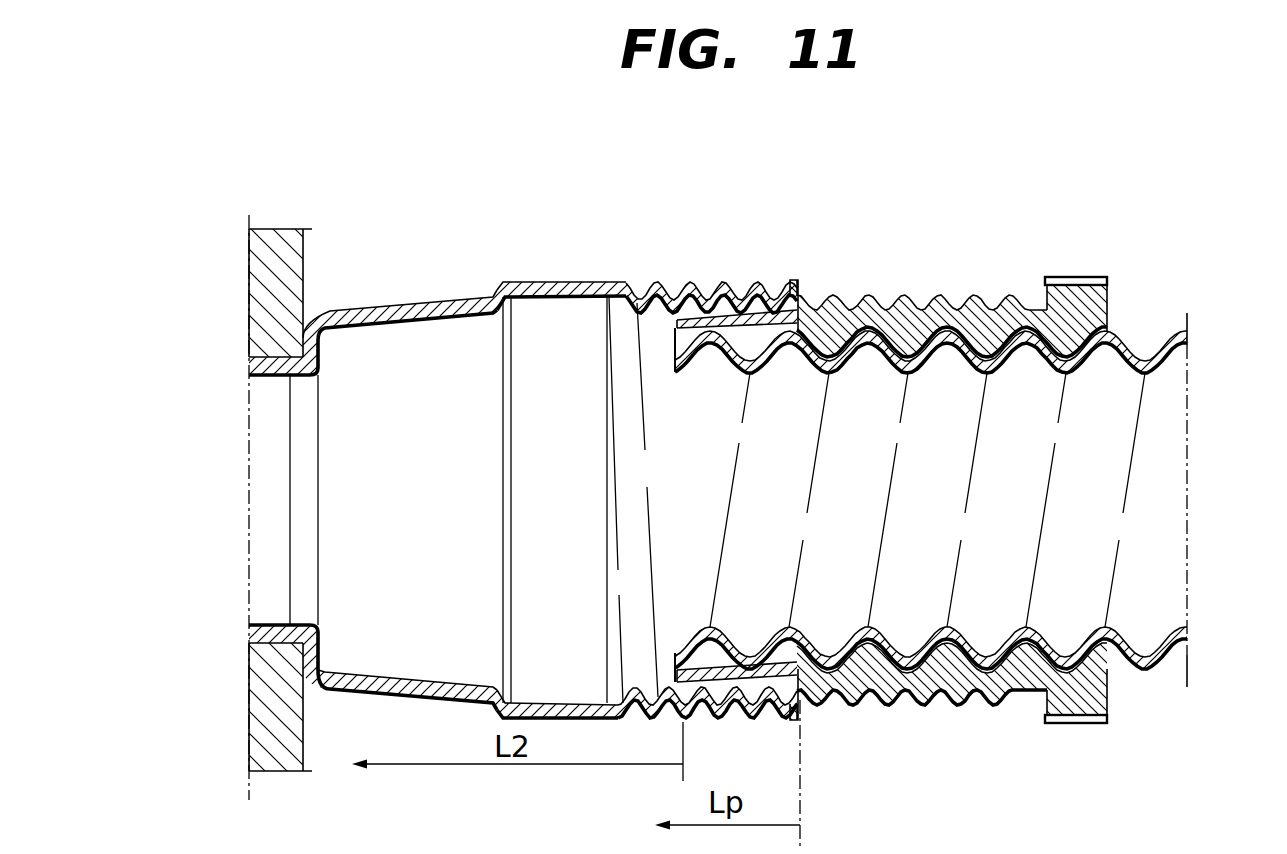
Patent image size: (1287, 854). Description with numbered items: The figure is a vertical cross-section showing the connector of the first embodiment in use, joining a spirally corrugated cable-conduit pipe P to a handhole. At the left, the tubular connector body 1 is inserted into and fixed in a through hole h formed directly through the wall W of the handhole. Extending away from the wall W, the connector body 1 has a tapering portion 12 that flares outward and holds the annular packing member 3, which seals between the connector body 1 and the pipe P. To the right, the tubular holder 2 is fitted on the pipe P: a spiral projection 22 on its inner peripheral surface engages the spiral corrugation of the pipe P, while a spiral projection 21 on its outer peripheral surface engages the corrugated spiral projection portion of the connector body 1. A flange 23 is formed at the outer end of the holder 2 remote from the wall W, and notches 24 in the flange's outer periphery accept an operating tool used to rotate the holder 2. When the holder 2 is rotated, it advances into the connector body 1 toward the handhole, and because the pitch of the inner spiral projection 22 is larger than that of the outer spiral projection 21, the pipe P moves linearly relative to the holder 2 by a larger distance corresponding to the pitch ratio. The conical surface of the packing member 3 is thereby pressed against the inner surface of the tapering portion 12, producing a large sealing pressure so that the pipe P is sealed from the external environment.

The connector body 1 is at (603, 282).
The tapering portion 12 is at (430, 302).
The packing member 3 is at (736, 286).
The holder 2 is at (882, 305).
The spiral projection 21 is at (864, 327).
The spiral projection 22 is at (830, 352).
The flange 23 is at (1110, 686).
The notches 24 is at (1078, 718).
The pipe P is at (1128, 330).
The wall W is at (306, 282).
The through hole h is at (262, 352).